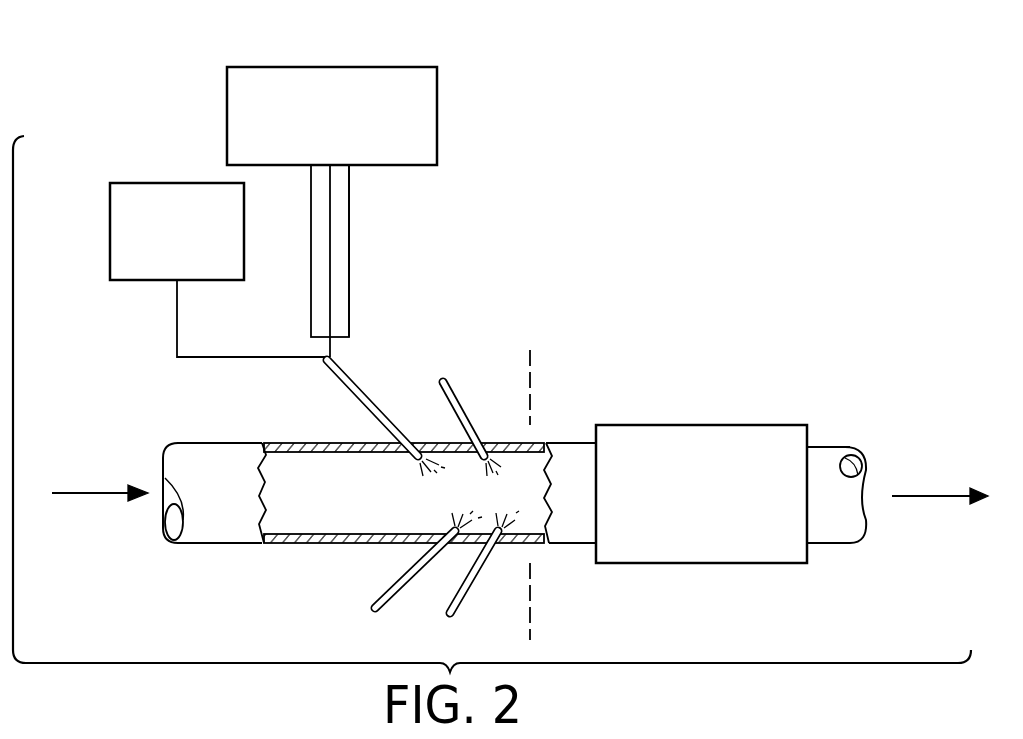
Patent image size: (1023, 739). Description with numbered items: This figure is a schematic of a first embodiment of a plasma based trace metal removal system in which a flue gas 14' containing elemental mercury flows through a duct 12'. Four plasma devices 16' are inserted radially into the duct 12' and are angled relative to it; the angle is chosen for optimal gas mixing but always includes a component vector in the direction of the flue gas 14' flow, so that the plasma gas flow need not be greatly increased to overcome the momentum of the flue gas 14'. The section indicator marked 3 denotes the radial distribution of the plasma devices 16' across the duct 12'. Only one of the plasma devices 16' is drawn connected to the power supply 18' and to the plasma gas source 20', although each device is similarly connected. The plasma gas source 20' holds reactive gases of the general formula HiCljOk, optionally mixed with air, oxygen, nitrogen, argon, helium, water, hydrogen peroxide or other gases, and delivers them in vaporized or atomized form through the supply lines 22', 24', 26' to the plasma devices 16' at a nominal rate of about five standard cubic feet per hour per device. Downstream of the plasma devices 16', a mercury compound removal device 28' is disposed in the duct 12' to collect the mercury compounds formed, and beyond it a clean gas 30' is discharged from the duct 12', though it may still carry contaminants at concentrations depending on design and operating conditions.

The duct 12' is at (514, 529).
The flue gas 14' is at (109, 458).
The plasma devices 16' is at (423, 503).
The power supply 18' is at (199, 252).
The plasma gas source 20' is at (332, 91).
The supply line 22' is at (310, 251).
The supply line 24' is at (365, 261).
The supply line 26' is at (390, 251).
The mercury compound removal device 28' is at (701, 468).
The clean gas 30' is at (946, 441).
The section view indicator FIG. 3 is at (534, 387).